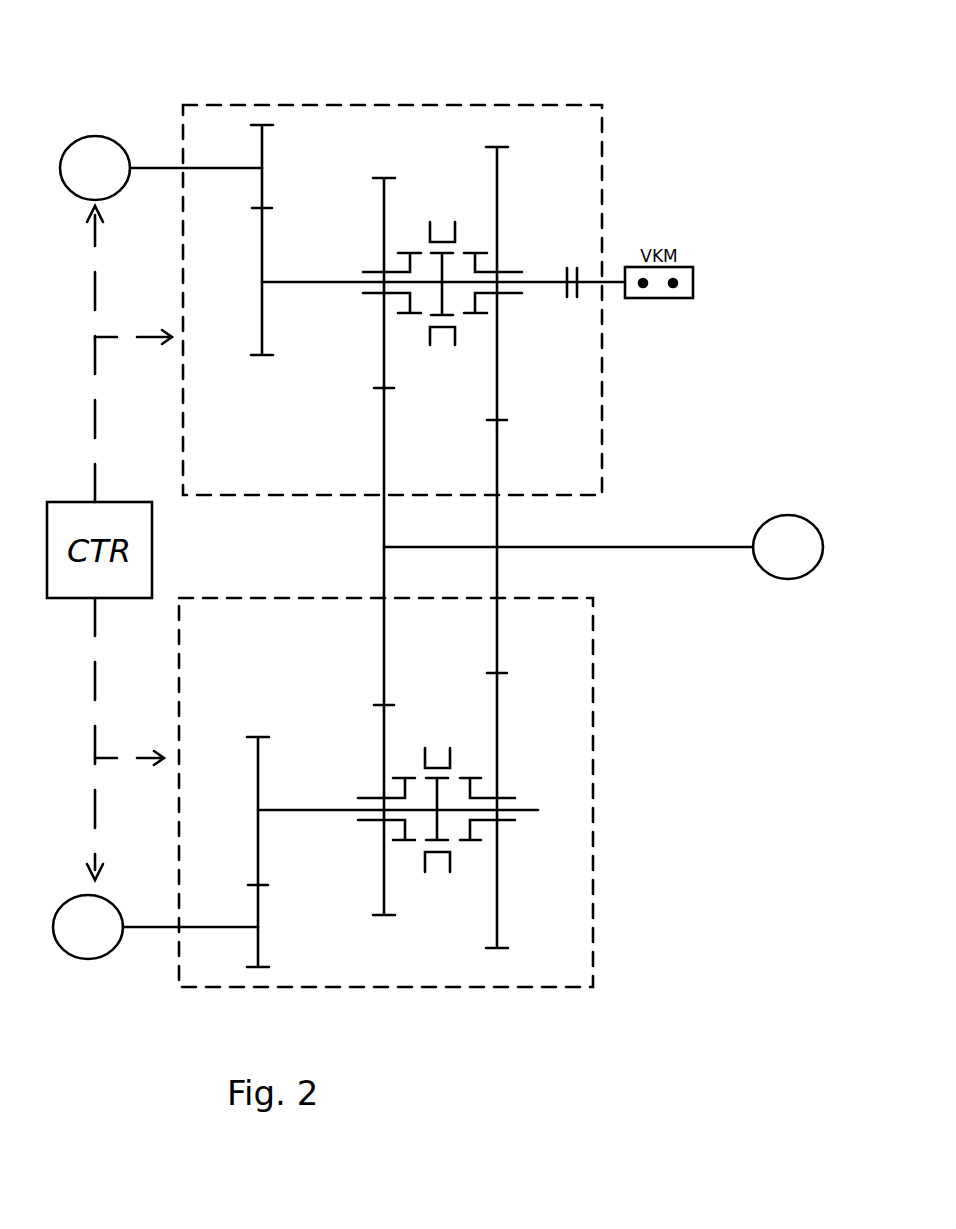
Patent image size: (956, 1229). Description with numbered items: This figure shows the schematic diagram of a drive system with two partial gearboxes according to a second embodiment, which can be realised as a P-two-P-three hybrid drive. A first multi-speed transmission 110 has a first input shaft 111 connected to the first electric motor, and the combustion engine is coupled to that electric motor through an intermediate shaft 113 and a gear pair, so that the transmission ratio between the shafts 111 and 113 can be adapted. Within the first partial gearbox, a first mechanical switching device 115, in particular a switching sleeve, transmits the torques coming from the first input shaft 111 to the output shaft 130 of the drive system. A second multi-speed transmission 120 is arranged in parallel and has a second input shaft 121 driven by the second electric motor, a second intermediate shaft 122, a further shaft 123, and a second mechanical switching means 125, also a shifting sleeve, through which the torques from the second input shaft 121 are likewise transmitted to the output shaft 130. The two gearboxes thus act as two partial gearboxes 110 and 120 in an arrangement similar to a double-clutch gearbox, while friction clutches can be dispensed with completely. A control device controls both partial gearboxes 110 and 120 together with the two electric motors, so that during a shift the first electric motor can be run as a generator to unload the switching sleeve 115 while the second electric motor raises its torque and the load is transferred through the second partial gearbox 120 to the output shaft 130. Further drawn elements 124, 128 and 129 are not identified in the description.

The first multi-speed transmission 110 is at (326, 105).
The first input shaft 111 is at (155, 165).
The intermediate shaft 113 is at (316, 282).
The first mechanical switching device 115 is at (393, 147).
The second multi-speed transmission 120 is at (297, 598).
The second input shaft 121 is at (148, 925).
The second intermediate shaft 122 is at (261, 726).
The shaft 123 is at (311, 808).
The sun gear shaft 124 is at (383, 932).
The second mechanical switching means 125 is at (386, 947).
The planet carrier 128 is at (429, 747).
The ring gear shaft 129 is at (498, 962).
The output shaft 130 is at (678, 547).